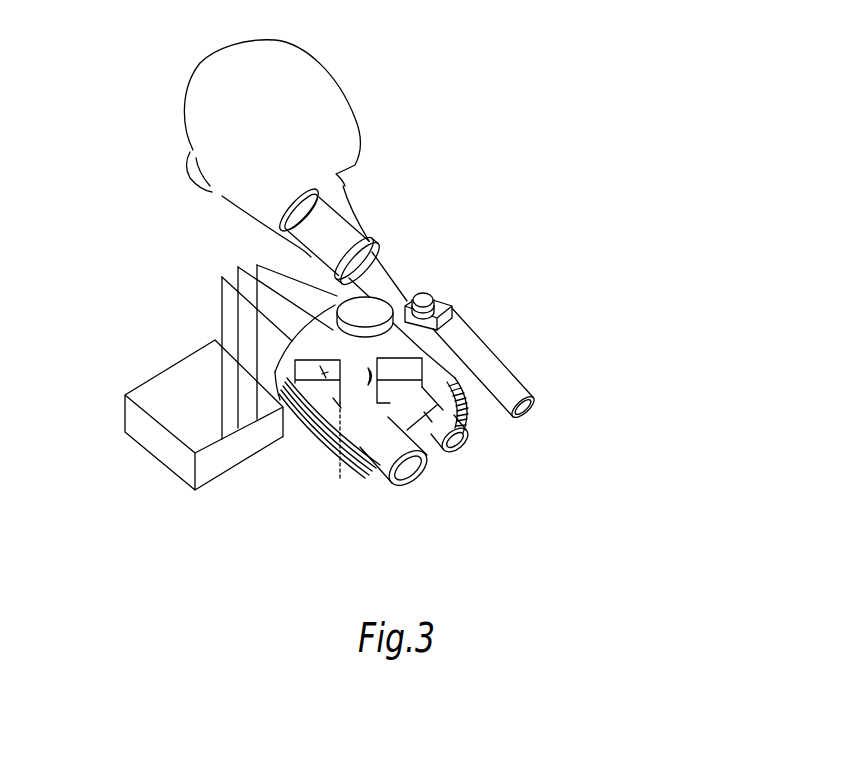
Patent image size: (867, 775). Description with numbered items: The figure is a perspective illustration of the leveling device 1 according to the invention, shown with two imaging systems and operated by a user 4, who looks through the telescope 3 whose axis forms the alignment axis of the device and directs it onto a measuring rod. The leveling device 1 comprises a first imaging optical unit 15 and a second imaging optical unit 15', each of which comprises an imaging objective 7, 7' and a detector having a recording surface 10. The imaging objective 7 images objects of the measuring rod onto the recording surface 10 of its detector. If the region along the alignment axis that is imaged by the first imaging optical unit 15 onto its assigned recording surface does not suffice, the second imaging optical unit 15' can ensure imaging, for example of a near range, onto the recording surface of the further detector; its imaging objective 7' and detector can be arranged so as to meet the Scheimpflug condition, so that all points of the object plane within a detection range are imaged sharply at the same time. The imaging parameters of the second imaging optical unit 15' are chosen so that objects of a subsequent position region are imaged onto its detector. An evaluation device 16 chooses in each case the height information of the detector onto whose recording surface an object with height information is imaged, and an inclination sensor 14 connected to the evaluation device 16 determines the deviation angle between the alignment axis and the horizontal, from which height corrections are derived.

The leveling device 1 is at (512, 274).
The telescope 3 is at (493, 355).
The user 4 is at (230, 218).
The imaging objective 7 is at (396, 492).
The imaging objective 7' is at (475, 458).
The recording surface 10 is at (358, 440).
The inclination sensor 14 is at (356, 314).
The first imaging optical unit 15 is at (286, 481).
The second imaging optical unit 15' is at (471, 486).
The evaluation device 16 is at (217, 390).